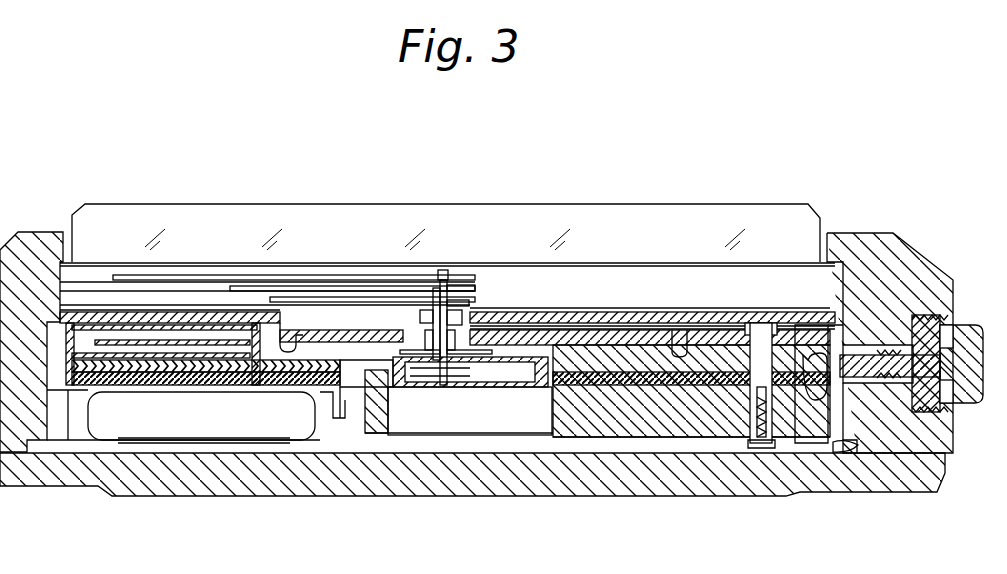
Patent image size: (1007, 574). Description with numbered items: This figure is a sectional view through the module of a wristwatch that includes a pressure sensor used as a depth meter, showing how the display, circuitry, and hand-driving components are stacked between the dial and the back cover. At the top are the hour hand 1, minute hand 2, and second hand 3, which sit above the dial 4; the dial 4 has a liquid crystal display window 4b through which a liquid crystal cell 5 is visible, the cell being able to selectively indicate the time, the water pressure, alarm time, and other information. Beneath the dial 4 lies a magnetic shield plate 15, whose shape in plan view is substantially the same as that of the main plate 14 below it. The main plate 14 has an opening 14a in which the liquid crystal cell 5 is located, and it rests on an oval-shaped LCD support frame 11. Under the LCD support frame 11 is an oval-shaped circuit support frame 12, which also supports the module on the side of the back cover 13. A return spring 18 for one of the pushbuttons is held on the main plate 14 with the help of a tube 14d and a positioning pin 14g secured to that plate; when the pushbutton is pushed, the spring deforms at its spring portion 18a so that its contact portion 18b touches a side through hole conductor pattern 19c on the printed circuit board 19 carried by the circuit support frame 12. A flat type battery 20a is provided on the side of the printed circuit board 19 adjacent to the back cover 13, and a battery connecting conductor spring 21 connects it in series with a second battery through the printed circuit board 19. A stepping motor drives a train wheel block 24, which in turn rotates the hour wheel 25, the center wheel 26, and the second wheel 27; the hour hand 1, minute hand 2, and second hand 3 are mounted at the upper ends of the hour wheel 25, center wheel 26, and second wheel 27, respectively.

The hour hand 1 is at (358, 300).
The minute hand 2 is at (327, 290).
The second hand 3 is at (296, 280).
The dial 4 is at (516, 312).
The liquid crystal display window 4b is at (128, 312).
The liquid crystal cell 5 is at (163, 333).
The LCD support frame 11 is at (632, 340).
The circuit support frame 12 is at (660, 400).
The back cover 13 is at (512, 480).
The main plate 14 is at (575, 343).
The opening 14a is at (290, 345).
The tube 14d is at (767, 333).
The positioning pin 14g is at (678, 335).
The magnetic shield plate 15 is at (565, 305).
The return spring 18 is at (723, 343).
The spring portion 18a is at (787, 340).
The contact portion 18b is at (845, 345).
The printed circuit board 19 is at (610, 353).
The side through hole conductor pattern 19c is at (800, 445).
The flat type battery 20a is at (268, 423).
The battery connecting conductor spring 21 is at (337, 415).
The train wheel block 24 is at (490, 372).
The hour wheel 25 is at (437, 290).
The center wheel 26 is at (410, 300).
The second wheel 27 is at (400, 306).